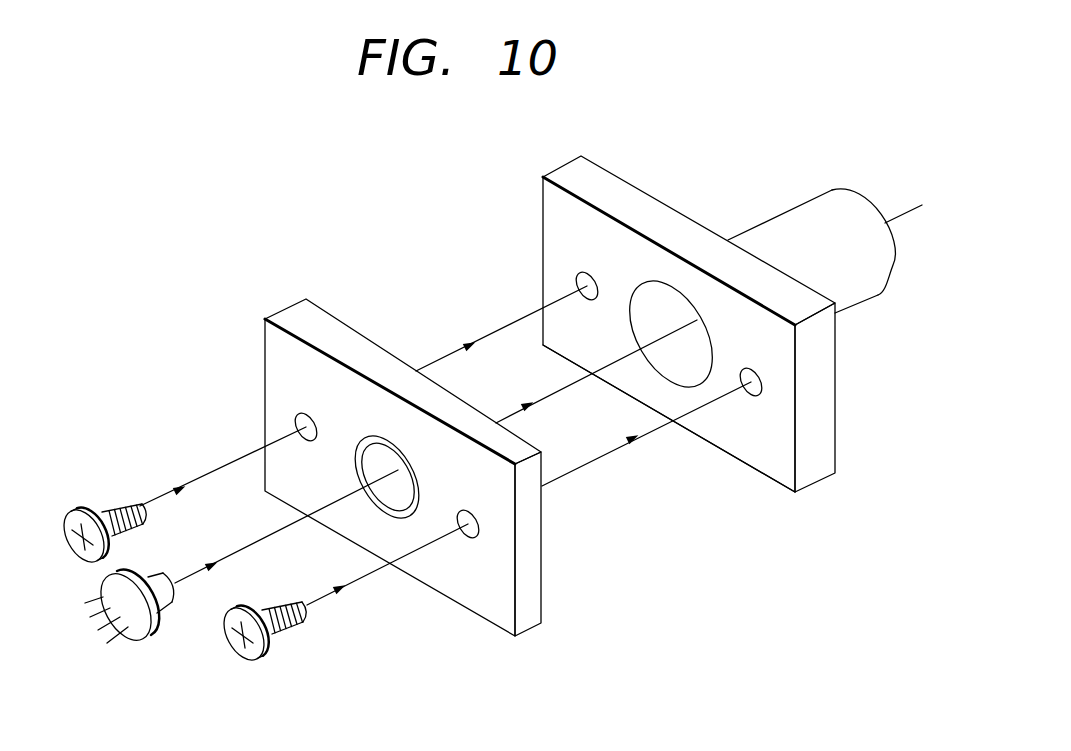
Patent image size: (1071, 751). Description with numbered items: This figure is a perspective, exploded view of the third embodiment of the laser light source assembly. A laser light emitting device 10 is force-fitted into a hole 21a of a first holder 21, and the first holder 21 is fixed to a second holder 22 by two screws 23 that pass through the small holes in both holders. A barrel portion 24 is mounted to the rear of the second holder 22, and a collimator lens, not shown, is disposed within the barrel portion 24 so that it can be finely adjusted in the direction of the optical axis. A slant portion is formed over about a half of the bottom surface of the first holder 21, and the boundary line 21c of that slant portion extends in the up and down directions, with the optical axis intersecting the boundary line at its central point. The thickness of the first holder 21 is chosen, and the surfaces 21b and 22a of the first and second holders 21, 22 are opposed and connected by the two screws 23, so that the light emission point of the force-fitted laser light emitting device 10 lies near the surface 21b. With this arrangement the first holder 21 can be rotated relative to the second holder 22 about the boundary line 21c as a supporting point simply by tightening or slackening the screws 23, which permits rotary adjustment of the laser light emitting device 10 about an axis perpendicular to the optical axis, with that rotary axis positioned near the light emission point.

The laser light emitting device 10 is at (135, 633).
The first holder 21 is at (302, 313).
The hole 21a is at (377, 455).
The surface 21b is at (542, 577).
The boundary line 21c is at (437, 367).
The second holder 22 is at (567, 167).
The surface 22a is at (752, 450).
The screws 23 is at (70, 518).
The barrel portion 24 is at (863, 278).